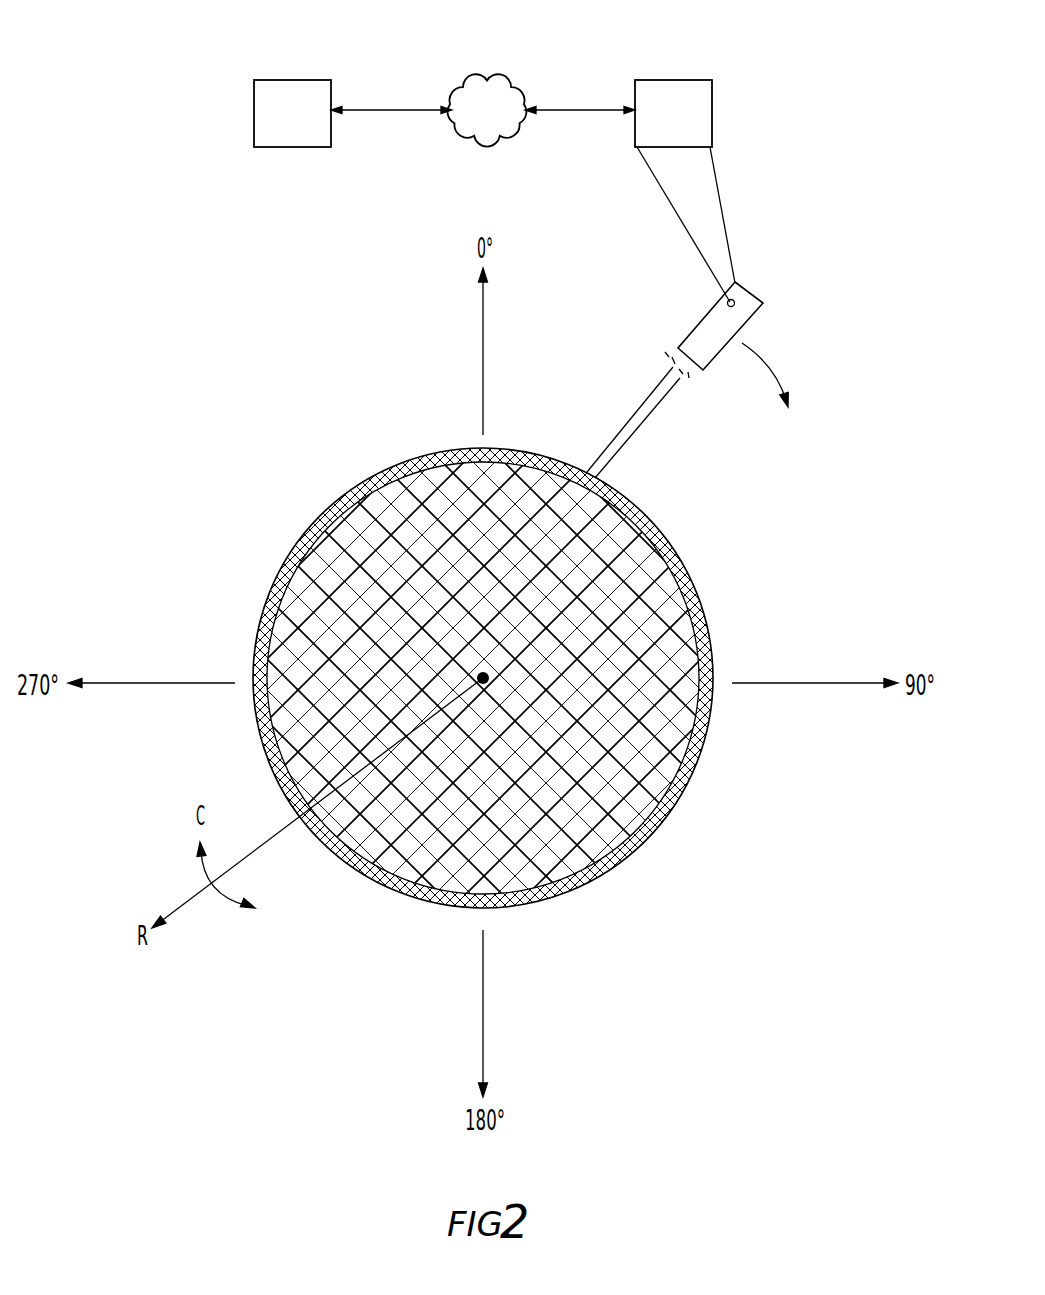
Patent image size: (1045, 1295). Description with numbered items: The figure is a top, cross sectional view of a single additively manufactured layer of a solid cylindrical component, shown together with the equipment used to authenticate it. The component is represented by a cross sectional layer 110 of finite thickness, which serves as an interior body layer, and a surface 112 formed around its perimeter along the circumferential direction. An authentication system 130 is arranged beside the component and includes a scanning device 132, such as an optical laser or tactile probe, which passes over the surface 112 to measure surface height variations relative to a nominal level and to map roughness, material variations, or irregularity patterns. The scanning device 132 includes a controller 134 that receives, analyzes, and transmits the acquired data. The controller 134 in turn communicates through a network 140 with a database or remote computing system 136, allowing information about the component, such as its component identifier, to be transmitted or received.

The cross sectional layer 110 is at (640, 614).
The surface 112 is at (334, 505).
The authentication system 130 is at (742, 56).
The scanning device 132 is at (729, 301).
The controller 134 is at (690, 128).
The database or remote computing system 136 is at (311, 128).
The network 140 is at (505, 128).